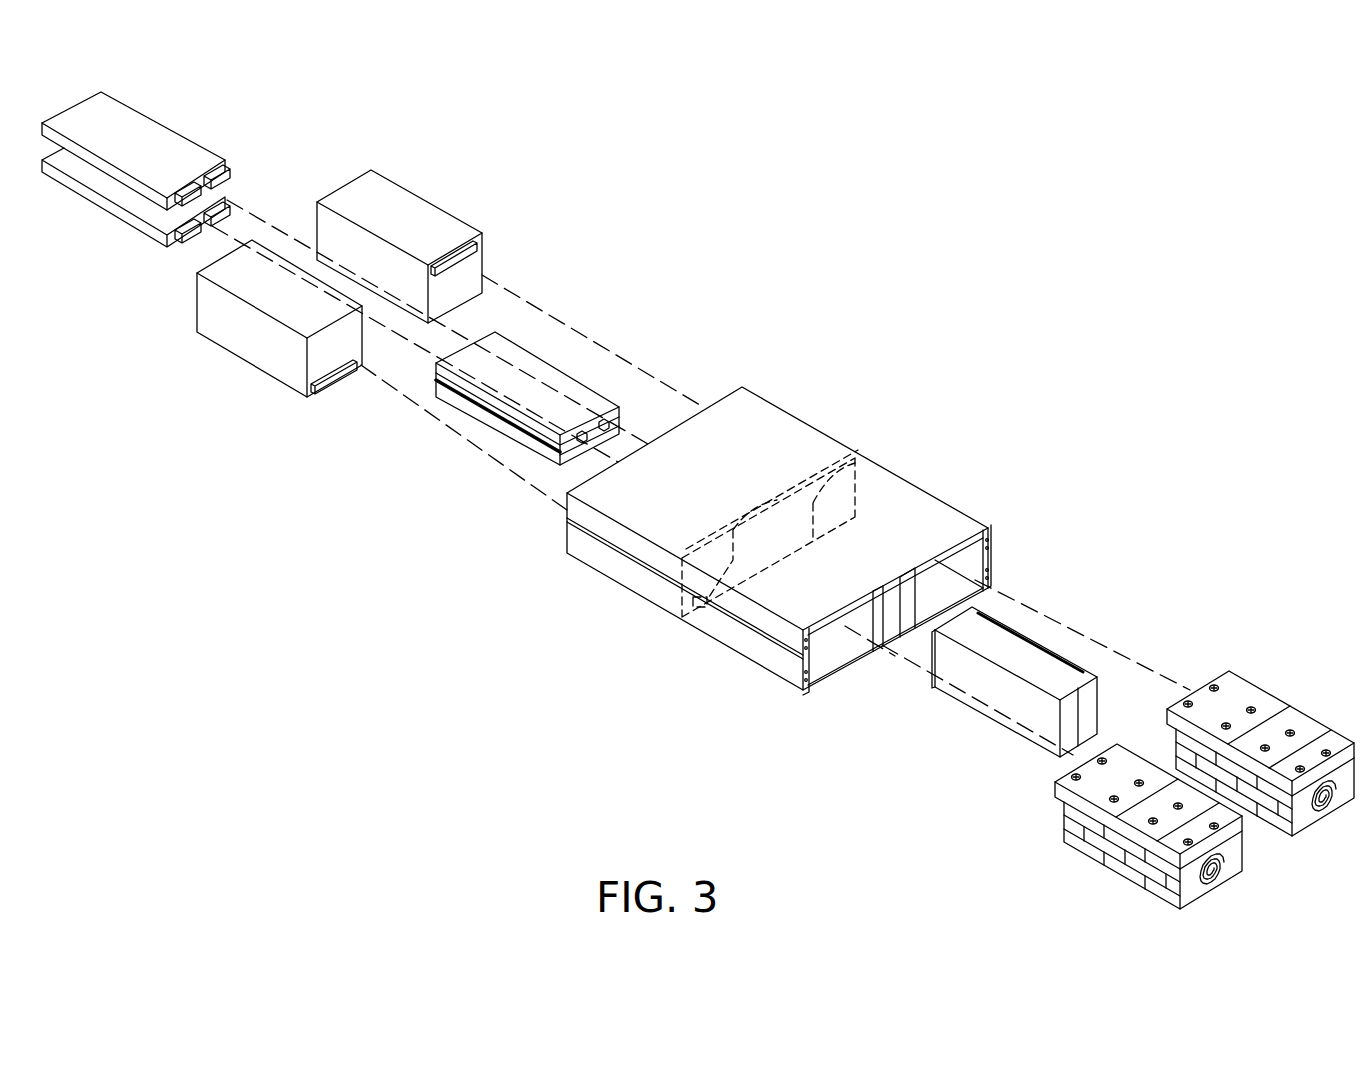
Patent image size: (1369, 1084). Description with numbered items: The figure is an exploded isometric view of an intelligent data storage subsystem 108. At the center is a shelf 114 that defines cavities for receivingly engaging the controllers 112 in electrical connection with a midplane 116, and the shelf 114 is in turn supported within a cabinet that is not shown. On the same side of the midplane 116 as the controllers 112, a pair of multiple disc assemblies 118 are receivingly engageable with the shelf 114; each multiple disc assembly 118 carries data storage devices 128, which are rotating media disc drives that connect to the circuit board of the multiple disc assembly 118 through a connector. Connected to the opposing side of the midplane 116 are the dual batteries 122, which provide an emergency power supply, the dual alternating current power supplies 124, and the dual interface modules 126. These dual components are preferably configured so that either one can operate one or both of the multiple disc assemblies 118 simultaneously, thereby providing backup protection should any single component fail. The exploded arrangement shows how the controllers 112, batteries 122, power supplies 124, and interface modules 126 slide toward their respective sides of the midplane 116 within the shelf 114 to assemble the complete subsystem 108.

The intelligent data storage subsystem 108 is at (698, 506).
The controllers 112 is at (1046, 657).
The shelf 114 is at (756, 537).
The midplane 116 is at (778, 517).
The multiple disc assemblies 118 is at (1163, 764).
The dual batteries 122 is at (520, 355).
The dual alternating current power supplies 124 is at (400, 215).
The dual interface modules 126 is at (165, 150).
The data storage device 128 is at (1243, 679).